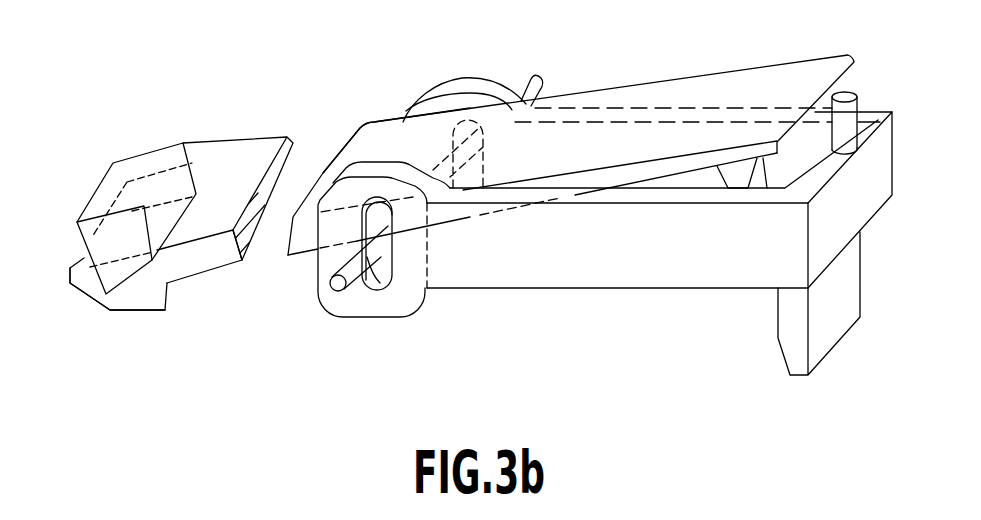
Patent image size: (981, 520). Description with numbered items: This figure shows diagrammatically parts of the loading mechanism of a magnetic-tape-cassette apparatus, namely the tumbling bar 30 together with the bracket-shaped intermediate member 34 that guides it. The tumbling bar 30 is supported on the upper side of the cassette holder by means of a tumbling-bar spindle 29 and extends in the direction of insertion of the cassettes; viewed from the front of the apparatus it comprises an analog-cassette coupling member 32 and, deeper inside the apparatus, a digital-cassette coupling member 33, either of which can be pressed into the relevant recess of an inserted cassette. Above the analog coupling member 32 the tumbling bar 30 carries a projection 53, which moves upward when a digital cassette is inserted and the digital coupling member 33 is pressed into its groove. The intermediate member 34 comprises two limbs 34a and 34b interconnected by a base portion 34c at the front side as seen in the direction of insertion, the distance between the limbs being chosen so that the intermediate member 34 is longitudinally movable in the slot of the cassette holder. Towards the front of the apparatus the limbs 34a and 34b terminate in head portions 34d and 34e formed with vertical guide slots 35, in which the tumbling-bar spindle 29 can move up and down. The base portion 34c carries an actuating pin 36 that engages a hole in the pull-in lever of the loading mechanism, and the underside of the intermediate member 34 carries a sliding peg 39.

The tumbling-bar spindle 29 is at (373, 290).
The tumbling bar 30 is at (633, 98).
The analog-cassette coupling member 32 is at (147, 302).
The digital-cassette coupling member 33 is at (742, 177).
The intermediate member 34 is at (602, 216).
The limb 34a is at (536, 265).
The limb 34b is at (571, 144).
The base portion 34c is at (863, 193).
The head portion 34d is at (325, 283).
The head portion 34e is at (398, 138).
The vertical guide slot 35 is at (392, 272).
The actuating pin 36 is at (847, 112).
The sliding peg 39 is at (842, 293).
The projection 53 is at (103, 287).